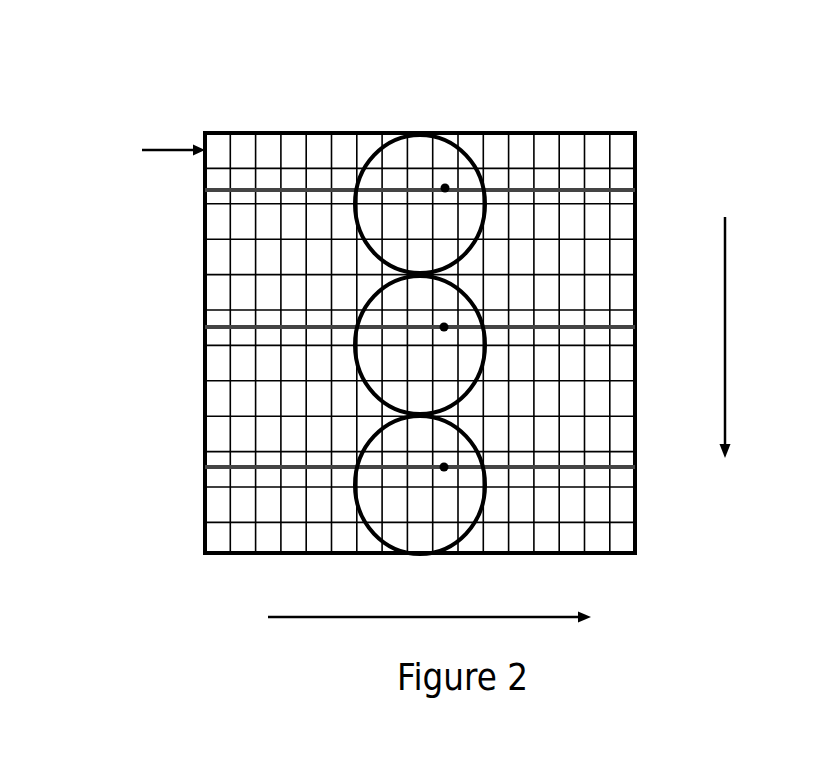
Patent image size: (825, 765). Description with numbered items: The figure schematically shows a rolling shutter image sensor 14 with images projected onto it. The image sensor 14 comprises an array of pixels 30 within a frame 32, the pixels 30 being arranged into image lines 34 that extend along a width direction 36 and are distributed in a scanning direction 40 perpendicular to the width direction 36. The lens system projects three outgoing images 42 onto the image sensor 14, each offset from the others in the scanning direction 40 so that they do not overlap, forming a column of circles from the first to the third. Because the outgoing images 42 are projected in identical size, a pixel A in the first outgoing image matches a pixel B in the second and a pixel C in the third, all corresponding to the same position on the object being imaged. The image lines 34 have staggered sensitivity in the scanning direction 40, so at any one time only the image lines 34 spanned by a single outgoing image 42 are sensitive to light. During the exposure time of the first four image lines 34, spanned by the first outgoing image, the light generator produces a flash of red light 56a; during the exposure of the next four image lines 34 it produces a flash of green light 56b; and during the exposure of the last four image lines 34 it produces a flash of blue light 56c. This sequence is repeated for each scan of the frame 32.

The rolling shutter image sensor 14 is at (19, 122).
The pixels 30 is at (498, 153).
The frame 32 is at (613, 130).
The image lines 34 is at (158, 151).
The width direction 36 is at (283, 620).
The scanning direction 40 is at (726, 264).
The outgoing images 42 is at (374, 150).
The flash of red light 56a is at (213, 190).
The flash of green light 56b is at (212, 327).
The flash of blue light 56c is at (212, 467).